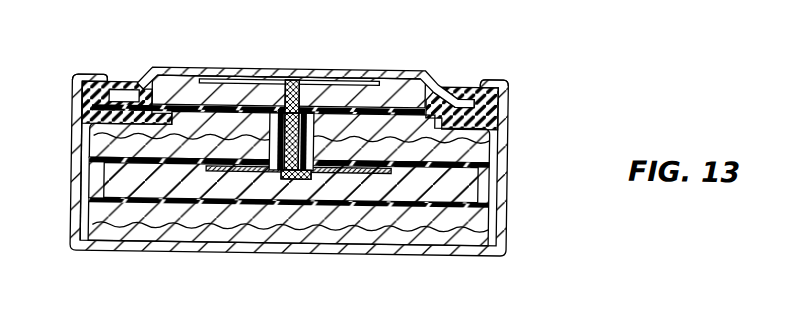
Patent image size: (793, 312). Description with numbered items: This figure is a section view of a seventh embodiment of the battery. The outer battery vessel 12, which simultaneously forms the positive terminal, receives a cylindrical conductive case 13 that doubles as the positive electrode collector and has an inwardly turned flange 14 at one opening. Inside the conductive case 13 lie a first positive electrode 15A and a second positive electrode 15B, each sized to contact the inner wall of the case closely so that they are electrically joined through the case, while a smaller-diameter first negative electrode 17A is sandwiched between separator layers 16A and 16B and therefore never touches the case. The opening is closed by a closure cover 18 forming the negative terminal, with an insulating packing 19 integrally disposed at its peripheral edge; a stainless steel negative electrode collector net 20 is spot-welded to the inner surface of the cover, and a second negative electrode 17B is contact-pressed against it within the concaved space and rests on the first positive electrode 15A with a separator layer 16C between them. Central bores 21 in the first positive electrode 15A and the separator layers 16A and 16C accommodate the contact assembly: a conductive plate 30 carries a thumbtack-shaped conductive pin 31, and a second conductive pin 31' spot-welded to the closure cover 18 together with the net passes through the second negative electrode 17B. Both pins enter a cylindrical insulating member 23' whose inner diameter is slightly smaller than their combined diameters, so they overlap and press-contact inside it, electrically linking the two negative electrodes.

The battery vessel 12 is at (170, 249).
The conductive case 13 is at (82, 133).
The inwardly turned flange 14 is at (461, 115).
The first positive electrode 15A is at (480, 152).
The second positive electrode 15B is at (481, 241).
The separator layer 16A is at (90, 162).
The separator layer 16B is at (88, 200).
The separator layer 16C is at (165, 109).
The first negative electrode 17A is at (467, 181).
The second negative electrode 17B is at (185, 86).
The closure cover 18 is at (410, 66).
The insulating packing 19 is at (85, 81).
The negative electrode collector net 20 is at (357, 76).
The central bores 21 is at (263, 77).
The cylindrical insulating member 23' is at (315, 93).
The conductive plate 30 is at (235, 173).
The conductive pin 31 is at (300, 201).
The second conductive pin 31' is at (305, 72).